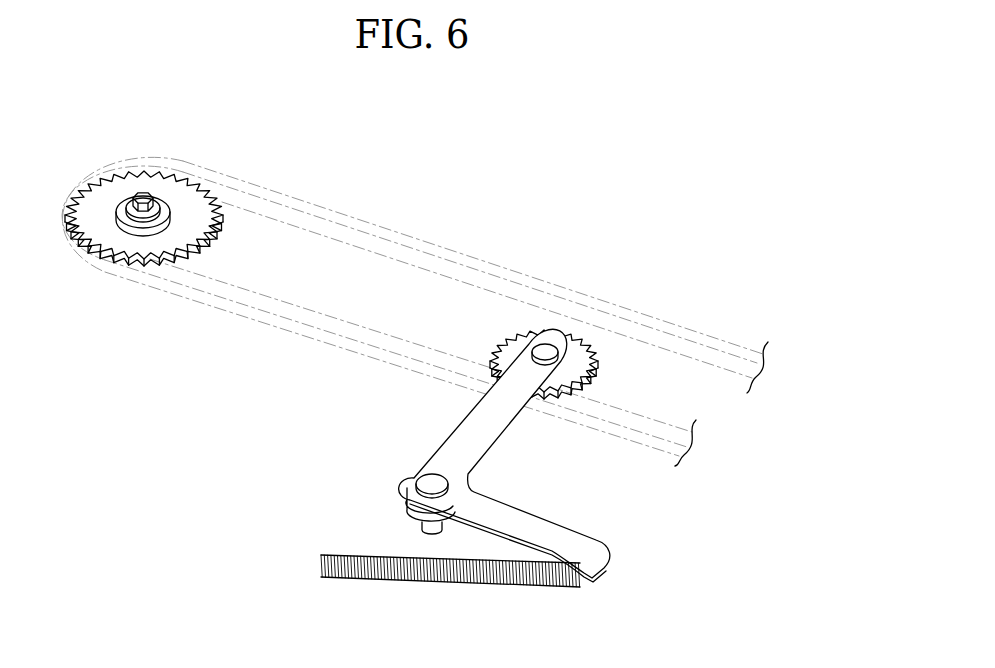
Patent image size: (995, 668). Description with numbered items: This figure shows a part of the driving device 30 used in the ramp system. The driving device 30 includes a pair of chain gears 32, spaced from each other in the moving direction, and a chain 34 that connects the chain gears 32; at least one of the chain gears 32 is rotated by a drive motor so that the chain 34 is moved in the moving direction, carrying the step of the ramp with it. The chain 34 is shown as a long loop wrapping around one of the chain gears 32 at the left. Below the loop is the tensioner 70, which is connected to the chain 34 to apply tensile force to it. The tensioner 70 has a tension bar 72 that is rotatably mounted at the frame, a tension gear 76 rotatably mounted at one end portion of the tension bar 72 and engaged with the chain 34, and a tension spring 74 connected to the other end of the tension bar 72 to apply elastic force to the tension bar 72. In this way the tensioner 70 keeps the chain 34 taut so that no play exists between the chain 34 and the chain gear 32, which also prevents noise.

The driving device 30 is at (457, 233).
The chain gears 32 is at (128, 240).
The chain 34 is at (323, 338).
The tensioner 70 is at (518, 455).
The tension bar 72 is at (574, 538).
The tension spring 74 is at (428, 585).
The tension gear 76 is at (602, 367).